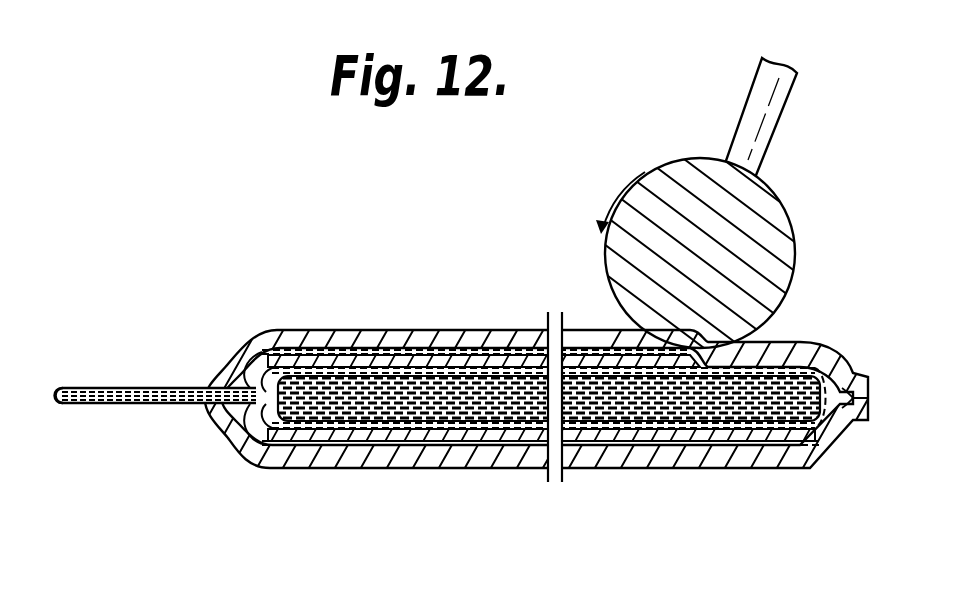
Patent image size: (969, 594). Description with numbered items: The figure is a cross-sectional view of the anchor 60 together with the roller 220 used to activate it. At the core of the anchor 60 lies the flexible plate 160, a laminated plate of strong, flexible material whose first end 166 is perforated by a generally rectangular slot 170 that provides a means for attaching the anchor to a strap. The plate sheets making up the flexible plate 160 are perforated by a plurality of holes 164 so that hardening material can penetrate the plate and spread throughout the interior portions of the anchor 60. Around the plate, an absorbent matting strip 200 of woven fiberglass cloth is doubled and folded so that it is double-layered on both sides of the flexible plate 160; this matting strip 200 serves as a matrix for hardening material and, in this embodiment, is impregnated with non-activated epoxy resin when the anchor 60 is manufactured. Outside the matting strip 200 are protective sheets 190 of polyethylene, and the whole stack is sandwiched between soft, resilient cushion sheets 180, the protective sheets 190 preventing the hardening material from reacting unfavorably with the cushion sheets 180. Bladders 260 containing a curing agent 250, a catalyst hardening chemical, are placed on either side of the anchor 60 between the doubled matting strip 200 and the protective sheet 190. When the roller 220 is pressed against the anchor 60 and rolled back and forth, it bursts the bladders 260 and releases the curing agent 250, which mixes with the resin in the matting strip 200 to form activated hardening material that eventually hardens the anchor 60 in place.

The anchor 60 is at (303, 330).
The flexible plate 160 is at (150, 406).
The holes 164 is at (783, 450).
The first end 166 is at (56, 388).
The slot 170 is at (105, 390).
The cushion sheets 180 is at (327, 458).
The protective sheets 190 is at (748, 442).
The matting strip 200 is at (247, 446).
The roller 220 is at (789, 234).
The curing agent 250 is at (458, 362).
The bladders 260 is at (402, 352).